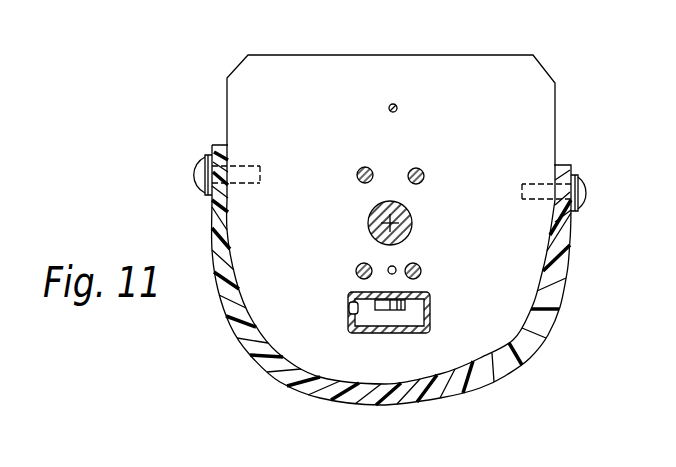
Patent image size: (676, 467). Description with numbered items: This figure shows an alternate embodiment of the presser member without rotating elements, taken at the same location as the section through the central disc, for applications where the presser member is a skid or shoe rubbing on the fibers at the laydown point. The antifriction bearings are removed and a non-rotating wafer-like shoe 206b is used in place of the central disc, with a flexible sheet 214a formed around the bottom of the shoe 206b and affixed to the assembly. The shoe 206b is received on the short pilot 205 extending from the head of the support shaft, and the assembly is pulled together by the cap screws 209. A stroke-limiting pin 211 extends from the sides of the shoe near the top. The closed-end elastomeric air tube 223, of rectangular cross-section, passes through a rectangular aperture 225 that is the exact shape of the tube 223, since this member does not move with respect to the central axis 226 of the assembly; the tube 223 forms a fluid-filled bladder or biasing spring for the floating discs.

The wafer-like shoe 206b is at (300, 55).
The flexible sheet 214a is at (430, 403).
The stroke-limiting pin 211 is at (389, 110).
The cap screws 209 is at (421, 169).
The pilot 205 is at (409, 212).
The central axis 226 is at (393, 226).
The elastomeric air tube 223 is at (350, 294).
The rectangular aperture 225 is at (349, 312).